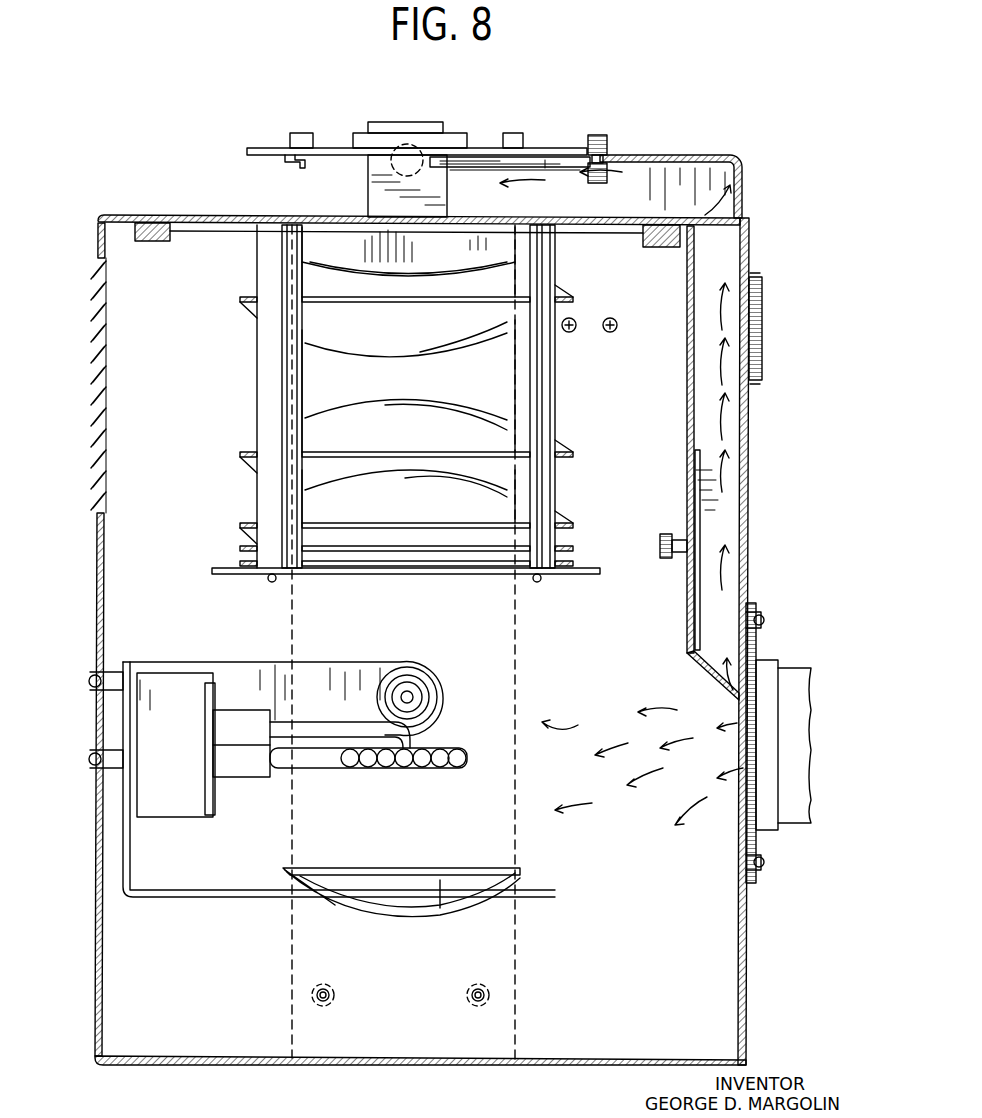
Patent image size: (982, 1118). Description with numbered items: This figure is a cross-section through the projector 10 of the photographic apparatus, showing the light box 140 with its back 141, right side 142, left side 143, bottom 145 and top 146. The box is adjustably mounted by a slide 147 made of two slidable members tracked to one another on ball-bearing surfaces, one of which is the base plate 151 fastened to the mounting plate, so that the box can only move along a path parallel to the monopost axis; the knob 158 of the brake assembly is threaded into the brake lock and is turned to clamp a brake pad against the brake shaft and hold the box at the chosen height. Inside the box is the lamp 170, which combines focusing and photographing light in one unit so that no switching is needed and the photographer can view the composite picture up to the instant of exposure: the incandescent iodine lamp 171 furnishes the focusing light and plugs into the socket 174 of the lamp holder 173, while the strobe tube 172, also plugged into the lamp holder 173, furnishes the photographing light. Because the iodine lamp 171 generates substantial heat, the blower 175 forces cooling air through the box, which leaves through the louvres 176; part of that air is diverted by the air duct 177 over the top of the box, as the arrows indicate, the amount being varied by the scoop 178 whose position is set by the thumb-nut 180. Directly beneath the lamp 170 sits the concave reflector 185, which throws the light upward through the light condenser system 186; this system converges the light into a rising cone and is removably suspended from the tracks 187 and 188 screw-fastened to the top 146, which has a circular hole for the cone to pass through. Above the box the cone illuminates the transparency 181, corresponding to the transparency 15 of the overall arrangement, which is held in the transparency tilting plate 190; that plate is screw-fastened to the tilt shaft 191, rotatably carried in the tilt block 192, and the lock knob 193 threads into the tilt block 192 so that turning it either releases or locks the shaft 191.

The projector 10 is at (769, 426).
The transparency 15 is at (368, 140).
The light box 140 is at (727, 998).
The back 141 is at (177, 599).
The right side 142 is at (748, 532).
The left side 143 is at (97, 565).
The bottom 145 is at (363, 1065).
The top 146 is at (150, 216).
The slide 147 is at (517, 992).
The base plate 151 is at (507, 858).
The knob 158 is at (755, 300).
The lamp 170 is at (460, 744).
The incandescent iodine lamp 171 is at (426, 684).
The strobe tube 172 is at (460, 768).
The lamp holder 173 is at (350, 672).
The socket 174 is at (442, 712).
The blower 175 is at (792, 672).
The louvres 176 is at (96, 363).
The air duct 177 is at (688, 441).
The scoop 178 is at (702, 674).
The thumb-nut 180 is at (664, 541).
The transparency 181 is at (440, 148).
The reflector 185 is at (520, 883).
The light condenser system 186 is at (569, 425).
The track 187 is at (165, 243).
The track 188 is at (652, 248).
The transparency tilting plate 190 is at (250, 148).
The tilt shaft 191 is at (390, 165).
The tilt block 192 is at (447, 210).
The lock knob 193 is at (599, 135).